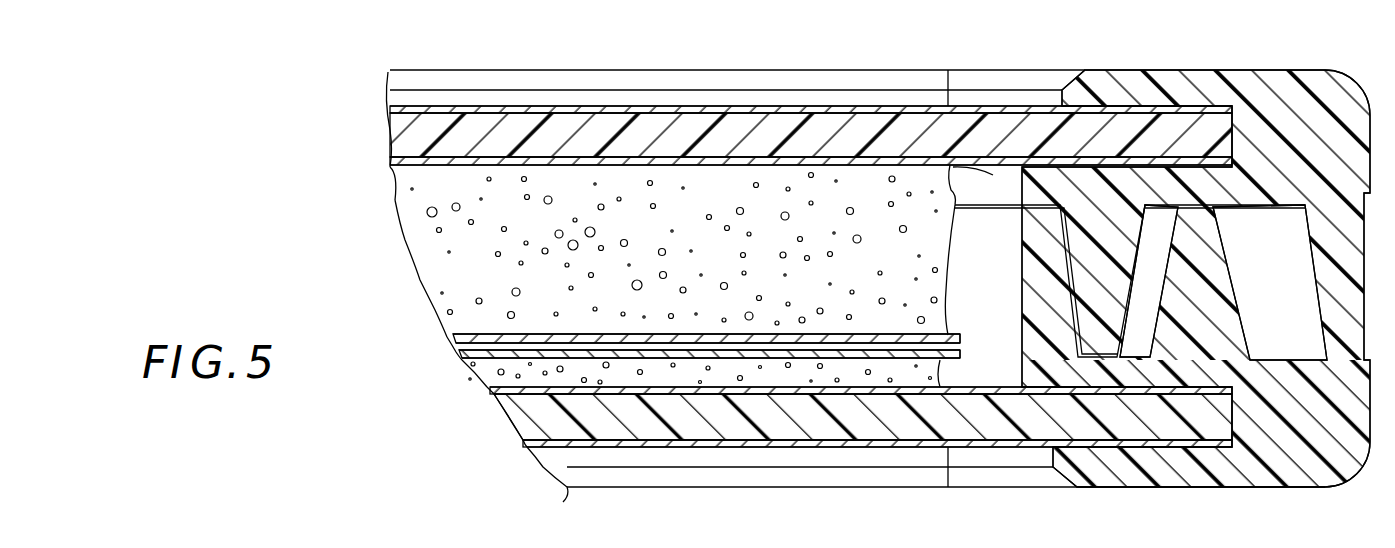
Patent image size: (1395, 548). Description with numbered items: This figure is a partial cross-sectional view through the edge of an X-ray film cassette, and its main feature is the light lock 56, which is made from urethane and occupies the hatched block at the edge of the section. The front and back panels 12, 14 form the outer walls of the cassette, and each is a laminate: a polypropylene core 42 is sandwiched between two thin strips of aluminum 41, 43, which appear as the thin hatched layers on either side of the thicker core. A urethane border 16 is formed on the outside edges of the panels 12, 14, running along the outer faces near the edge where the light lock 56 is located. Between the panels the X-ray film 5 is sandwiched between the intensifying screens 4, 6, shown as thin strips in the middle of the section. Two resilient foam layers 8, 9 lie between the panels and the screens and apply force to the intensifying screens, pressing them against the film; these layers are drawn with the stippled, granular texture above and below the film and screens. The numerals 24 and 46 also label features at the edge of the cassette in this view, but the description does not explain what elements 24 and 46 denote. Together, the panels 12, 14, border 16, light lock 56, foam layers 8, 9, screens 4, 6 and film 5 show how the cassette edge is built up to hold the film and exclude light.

The intensifying screen 4 is at (447, 317).
The X-ray film 5 is at (455, 345).
The intensifying screen 6 is at (480, 378).
The resilient foam layer 8 is at (418, 233).
The resilient foam layer 9 is at (497, 390).
The front panel 12 is at (702, 488).
The back panel 14 is at (772, 68).
The urethane border 16 is at (890, 82).
The edge of panel 24 is at (483, 467).
The thin strip of aluminum 41 is at (492, 157).
The polypropylene core 42 is at (565, 130).
The thin strip of aluminum 43 is at (650, 110).
The seal 46 is at (397, 183).
The light lock 56 is at (1210, 266).